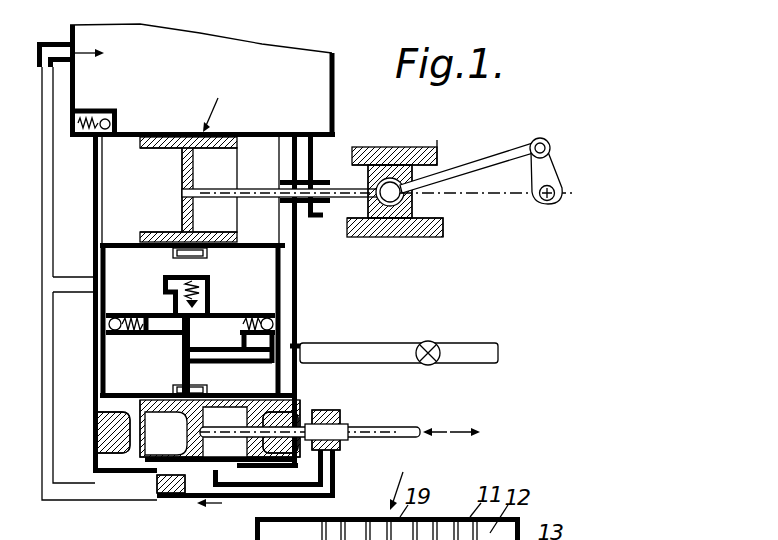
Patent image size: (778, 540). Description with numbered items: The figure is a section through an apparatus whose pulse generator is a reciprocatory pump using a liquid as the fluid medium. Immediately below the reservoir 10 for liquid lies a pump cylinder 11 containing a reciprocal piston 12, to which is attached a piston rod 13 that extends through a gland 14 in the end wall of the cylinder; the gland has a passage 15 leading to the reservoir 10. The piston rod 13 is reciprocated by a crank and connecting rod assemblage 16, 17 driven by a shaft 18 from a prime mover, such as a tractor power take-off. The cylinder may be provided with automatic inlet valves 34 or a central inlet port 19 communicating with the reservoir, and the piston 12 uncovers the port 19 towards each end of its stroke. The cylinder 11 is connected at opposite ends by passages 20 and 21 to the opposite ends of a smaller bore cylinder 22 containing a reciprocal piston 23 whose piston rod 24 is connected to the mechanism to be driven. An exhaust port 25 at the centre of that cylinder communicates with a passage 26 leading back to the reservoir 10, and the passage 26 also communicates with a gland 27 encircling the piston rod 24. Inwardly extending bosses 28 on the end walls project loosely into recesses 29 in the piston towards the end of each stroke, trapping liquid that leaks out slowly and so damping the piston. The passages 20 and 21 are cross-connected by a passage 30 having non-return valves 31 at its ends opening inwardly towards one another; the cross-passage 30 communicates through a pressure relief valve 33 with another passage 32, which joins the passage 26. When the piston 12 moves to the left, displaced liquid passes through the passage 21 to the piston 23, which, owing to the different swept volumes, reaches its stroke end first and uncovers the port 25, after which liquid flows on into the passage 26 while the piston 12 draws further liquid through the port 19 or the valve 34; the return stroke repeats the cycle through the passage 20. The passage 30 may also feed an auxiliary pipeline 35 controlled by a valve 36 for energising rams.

The reservoir 10 is at (322, 78).
The pump cylinder 11 is at (248, 248).
The piston 12 is at (188, 210).
The piston rod 13 is at (347, 187).
The gland 14 is at (305, 208).
The passage 15 is at (305, 152).
The crank 16 is at (543, 165).
The connecting rod 17 is at (467, 168).
The shaft 18 is at (547, 205).
The central inlet port 19 is at (192, 133).
The passage 20 is at (290, 315).
The passage 21 is at (100, 360).
The smaller bore cylinder 22 is at (120, 473).
The piston 23 is at (197, 462).
The piston rod 24 is at (395, 430).
The exhaust port 25 is at (183, 483).
The passage 26 is at (47, 150).
The gland 27 is at (330, 443).
The bosses 28 is at (110, 437).
The recesses 29 is at (173, 427).
The cross-passage 30 is at (217, 312).
The non-return valves 31 is at (112, 325).
The passage 32 is at (63, 280).
The pressure relief valve 33 is at (190, 300).
The automatic inlet valves 34 is at (160, 122).
The auxiliary pipeline 35 is at (362, 350).
The valve 36 is at (430, 341).